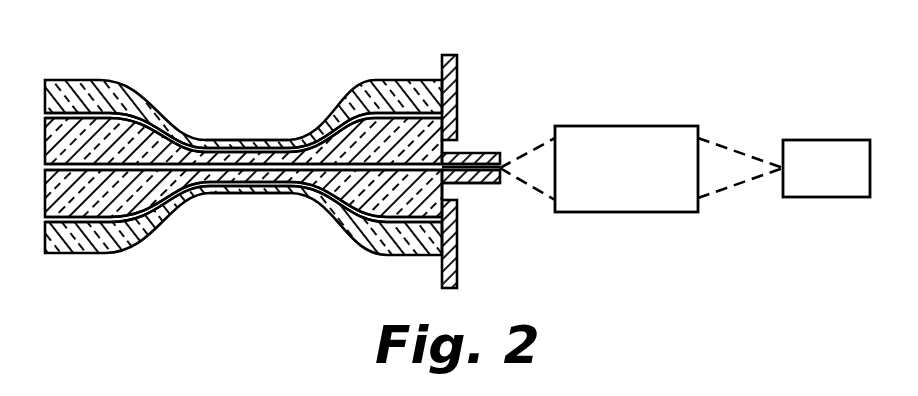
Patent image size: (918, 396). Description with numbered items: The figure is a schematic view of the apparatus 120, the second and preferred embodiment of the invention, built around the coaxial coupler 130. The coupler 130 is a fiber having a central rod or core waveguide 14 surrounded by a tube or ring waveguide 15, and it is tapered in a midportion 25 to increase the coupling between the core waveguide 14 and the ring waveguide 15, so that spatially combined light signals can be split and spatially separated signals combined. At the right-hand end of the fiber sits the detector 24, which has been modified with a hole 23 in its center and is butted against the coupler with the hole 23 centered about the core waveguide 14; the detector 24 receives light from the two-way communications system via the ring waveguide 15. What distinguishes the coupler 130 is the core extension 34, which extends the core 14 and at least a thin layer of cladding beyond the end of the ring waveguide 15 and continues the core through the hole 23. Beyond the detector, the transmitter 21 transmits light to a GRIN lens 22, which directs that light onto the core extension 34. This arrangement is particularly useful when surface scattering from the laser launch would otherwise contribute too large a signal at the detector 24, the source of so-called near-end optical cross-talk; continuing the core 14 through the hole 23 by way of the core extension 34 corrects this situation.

The core waveguide 14 is at (436, 160).
The ring waveguide 15 is at (422, 110).
The coaxial coupler 130 is at (360, 93).
The tapered midportion 25 is at (242, 131).
The detector 24 is at (457, 70).
The core extension 34 is at (477, 156).
The hole 23 is at (459, 190).
The apparatus 120 is at (557, 72).
The GRIN lens 22 is at (633, 138).
The transmitter 21 is at (825, 154).